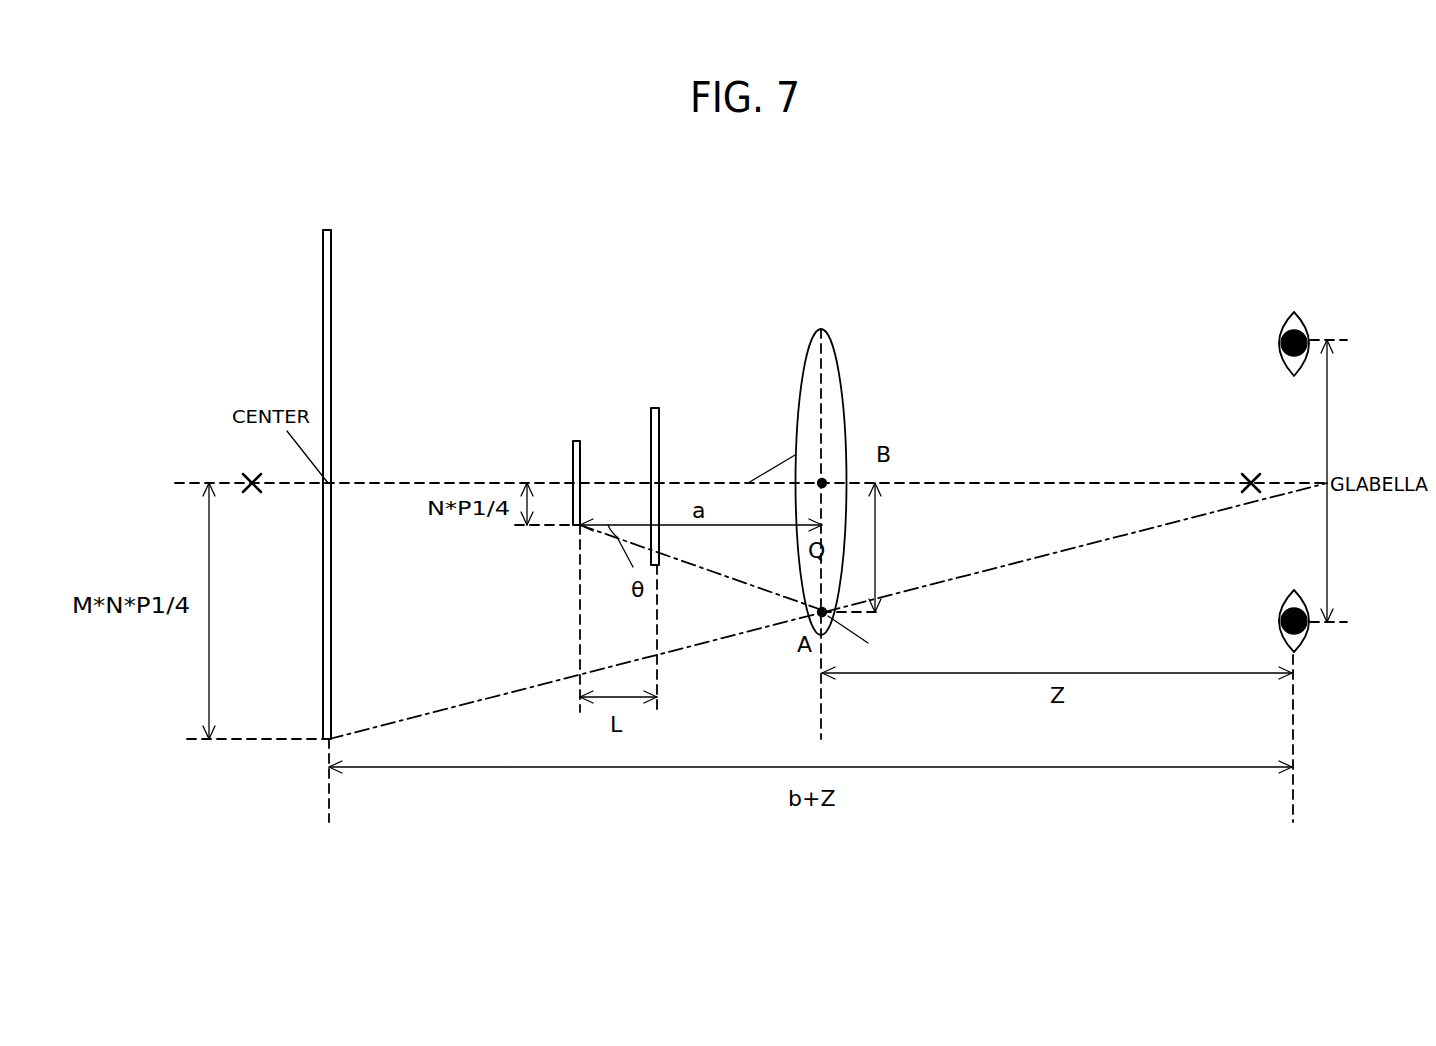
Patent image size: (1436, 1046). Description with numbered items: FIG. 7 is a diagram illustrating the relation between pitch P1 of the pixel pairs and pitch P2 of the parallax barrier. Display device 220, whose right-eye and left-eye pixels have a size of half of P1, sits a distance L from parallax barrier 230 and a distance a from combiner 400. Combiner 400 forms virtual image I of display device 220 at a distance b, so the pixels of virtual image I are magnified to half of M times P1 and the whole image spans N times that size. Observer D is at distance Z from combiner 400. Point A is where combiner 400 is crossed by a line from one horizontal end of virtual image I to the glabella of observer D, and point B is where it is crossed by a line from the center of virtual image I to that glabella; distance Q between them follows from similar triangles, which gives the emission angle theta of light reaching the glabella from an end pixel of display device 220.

The display device 220 is at (581, 441).
The parallax barrier 230 is at (659, 423).
The combiner 400 is at (832, 346).
The virtual image I is at (331, 245).
The observer D is at (1305, 325).